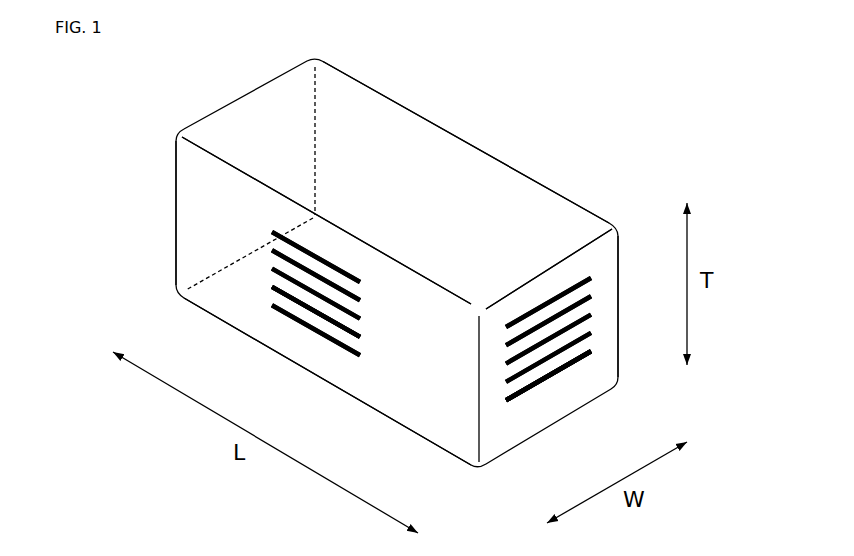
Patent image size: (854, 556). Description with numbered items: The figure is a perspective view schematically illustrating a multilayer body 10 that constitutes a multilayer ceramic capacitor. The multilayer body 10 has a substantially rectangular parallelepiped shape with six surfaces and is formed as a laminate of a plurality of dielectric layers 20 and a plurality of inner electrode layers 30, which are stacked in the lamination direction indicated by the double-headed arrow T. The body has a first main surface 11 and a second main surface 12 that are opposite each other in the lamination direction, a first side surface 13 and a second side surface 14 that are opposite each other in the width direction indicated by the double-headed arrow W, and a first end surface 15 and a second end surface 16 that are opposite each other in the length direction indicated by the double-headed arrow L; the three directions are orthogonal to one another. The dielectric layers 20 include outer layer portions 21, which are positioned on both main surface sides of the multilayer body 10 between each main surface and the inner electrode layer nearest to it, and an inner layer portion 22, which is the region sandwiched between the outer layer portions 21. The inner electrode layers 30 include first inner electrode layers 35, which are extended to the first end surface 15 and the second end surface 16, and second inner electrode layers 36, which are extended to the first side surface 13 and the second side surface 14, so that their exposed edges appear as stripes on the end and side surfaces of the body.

The multilayer body 10 is at (616, 139).
The first main surface 11 is at (412, 135).
The second main surface 12 is at (403, 386).
The first side surface 13 is at (227, 293).
The second side surface 14 is at (493, 196).
The first end surface 15 is at (193, 178).
The second end surface 16 is at (610, 290).
The dielectric layers 20 is at (431, 316).
The outer layer portions 21 is at (580, 268).
The inner layer portion 22 is at (288, 290).
The inner electrode layers 30 is at (431, 343).
The first inner electrode layers 35 is at (553, 380).
The second inner electrode layers 36 is at (343, 333).